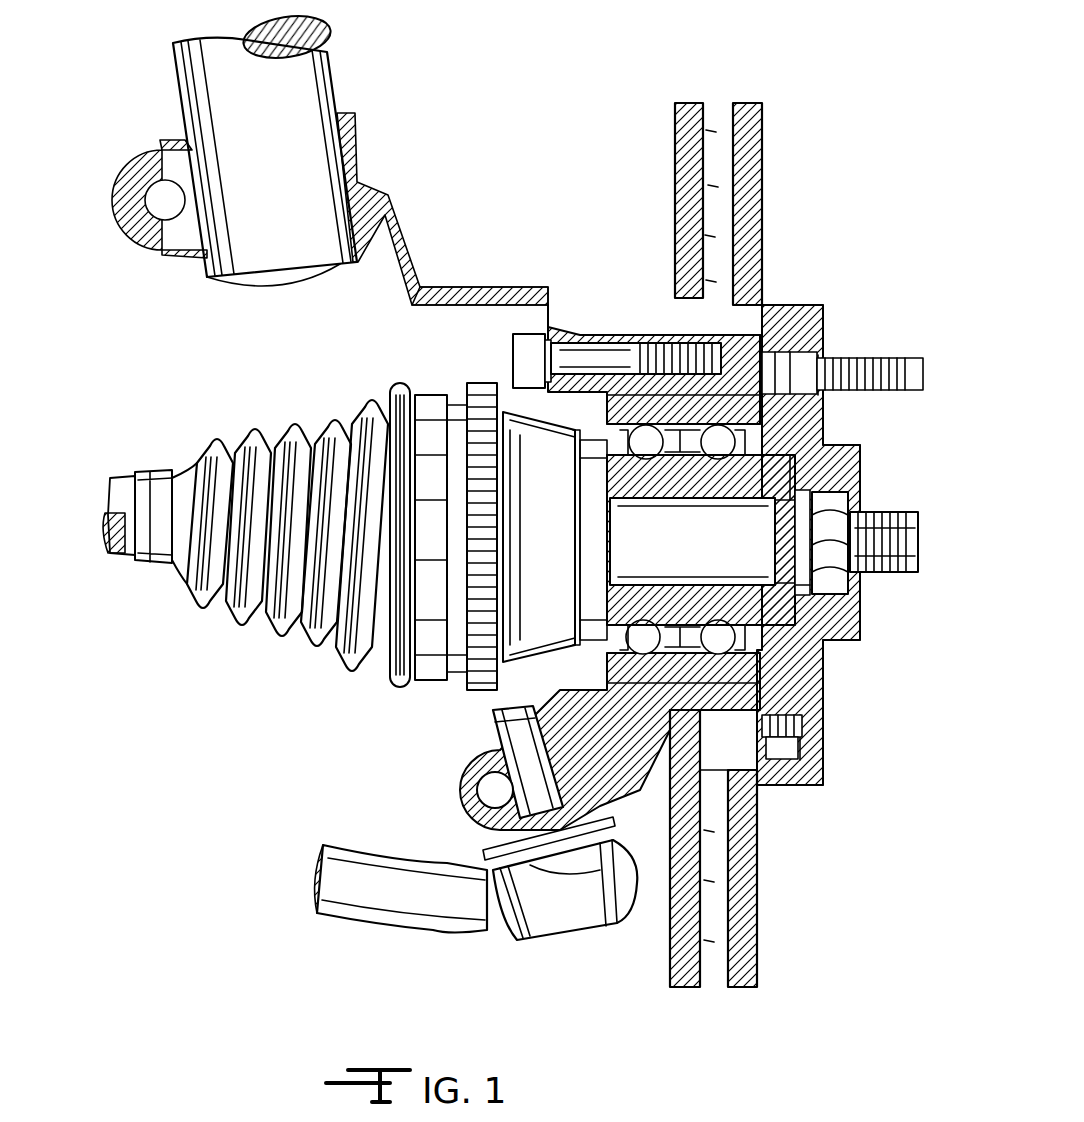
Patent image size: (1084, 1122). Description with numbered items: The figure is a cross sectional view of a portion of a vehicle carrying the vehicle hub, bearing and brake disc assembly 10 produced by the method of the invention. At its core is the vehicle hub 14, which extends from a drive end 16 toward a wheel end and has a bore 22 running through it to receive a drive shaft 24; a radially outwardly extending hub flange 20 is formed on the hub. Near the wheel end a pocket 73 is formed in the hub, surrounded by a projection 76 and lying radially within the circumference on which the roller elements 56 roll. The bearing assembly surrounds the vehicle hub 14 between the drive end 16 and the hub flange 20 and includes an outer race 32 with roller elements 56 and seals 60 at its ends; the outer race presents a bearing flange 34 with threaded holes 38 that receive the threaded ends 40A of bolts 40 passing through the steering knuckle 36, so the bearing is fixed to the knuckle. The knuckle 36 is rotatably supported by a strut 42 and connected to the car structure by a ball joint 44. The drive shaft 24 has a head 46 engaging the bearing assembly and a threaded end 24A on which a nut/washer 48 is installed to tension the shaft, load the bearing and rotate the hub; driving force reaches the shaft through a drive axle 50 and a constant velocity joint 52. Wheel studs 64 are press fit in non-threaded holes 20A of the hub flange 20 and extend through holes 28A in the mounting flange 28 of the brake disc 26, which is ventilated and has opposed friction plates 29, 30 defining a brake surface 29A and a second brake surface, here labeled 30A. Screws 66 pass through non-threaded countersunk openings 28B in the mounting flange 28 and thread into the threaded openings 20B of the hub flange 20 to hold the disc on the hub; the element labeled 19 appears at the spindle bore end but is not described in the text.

The vehicle hub, bearing and brake disc assembly 10 is at (825, 215).
The vehicle hub 14 is at (915, 535).
The drive end 16 is at (605, 597).
The spindle bore end 19 is at (762, 506).
The hub flange 20 is at (800, 685).
The non-threaded holes 20A is at (835, 330).
The threaded openings 20B is at (758, 890).
The bore 22 is at (493, 560).
The drive shaft 24 is at (678, 552).
The threaded end 24A is at (850, 585).
The brake disc 26 is at (757, 905).
The mounting flange 28 is at (800, 790).
The holes 28A is at (850, 388).
The non-threaded countersunk openings 28B is at (810, 760).
The friction plate 29 is at (680, 987).
The brake surface 29A is at (675, 130).
The friction plate 30 is at (757, 950).
The outer disc plate upper 30A is at (764, 115).
The outer race 32 is at (765, 330).
The bearing flange 34 is at (740, 300).
The steering knuckle 36 is at (572, 300).
The threaded holes 38 is at (665, 335).
The bolts 40 is at (545, 330).
The threaded ends 40A is at (750, 330).
The strut 42 is at (340, 62).
The ball joint 44 is at (622, 900).
The head 46 is at (605, 505).
The nut/washer 48 is at (850, 520).
The drive axle 50 is at (140, 472).
The constant velocity joint 52 is at (435, 395).
The roller elements 56 is at (665, 395).
The seals 60 is at (630, 437).
The threaded wheel studs 64 is at (855, 355).
The screws 66 is at (820, 740).
The pocket 73 is at (790, 575).
The projection 76 is at (853, 640).